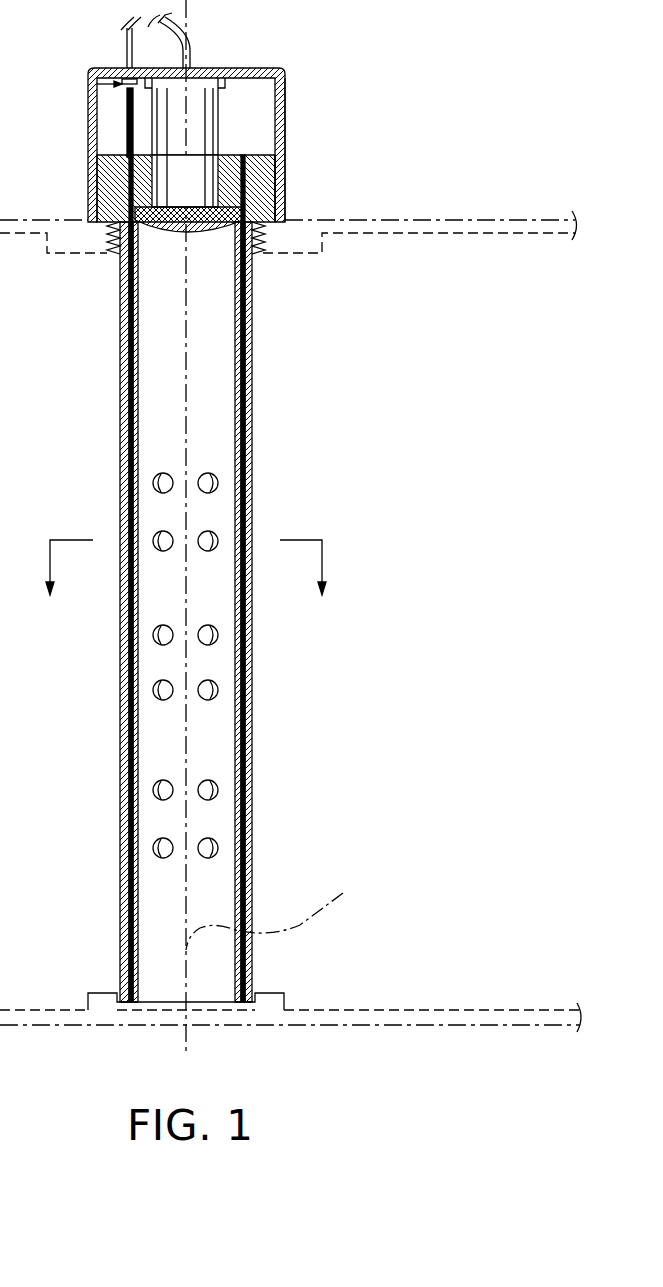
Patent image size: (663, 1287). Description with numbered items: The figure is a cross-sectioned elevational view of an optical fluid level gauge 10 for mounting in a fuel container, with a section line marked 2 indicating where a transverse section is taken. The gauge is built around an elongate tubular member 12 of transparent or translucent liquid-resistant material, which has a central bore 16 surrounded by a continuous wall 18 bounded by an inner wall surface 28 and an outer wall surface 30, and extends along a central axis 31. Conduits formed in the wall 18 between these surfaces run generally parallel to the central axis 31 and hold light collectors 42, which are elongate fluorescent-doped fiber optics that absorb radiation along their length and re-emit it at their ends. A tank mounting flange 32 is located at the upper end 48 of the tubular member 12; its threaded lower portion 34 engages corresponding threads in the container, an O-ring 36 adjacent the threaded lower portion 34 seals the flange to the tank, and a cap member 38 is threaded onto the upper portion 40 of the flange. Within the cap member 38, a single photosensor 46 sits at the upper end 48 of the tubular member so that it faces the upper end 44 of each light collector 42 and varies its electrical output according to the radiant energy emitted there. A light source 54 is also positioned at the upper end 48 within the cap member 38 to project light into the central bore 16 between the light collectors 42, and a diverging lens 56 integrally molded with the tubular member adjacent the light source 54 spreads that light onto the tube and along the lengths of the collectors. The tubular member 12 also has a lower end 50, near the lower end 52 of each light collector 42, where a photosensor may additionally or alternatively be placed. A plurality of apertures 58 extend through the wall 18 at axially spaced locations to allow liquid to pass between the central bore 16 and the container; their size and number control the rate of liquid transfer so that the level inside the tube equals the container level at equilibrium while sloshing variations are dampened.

The fluid level gauge 10 is at (397, 118).
The tubular member 12 is at (252, 358).
The central bore 16 is at (207, 432).
The wall 18 is at (248, 452).
The inner wall surface 28 is at (149, 352).
The outer wall surface 30 is at (120, 352).
The central axis 31 is at (281, 906).
The tank mounting flange 32 is at (286, 198).
The threaded lower portion 34 is at (266, 242).
The O-ring 36 is at (106, 230).
The cap member 38 is at (285, 88).
The upper portion 40 is at (285, 184).
The light collector 42 is at (127, 138).
The upper end 44 is at (127, 104).
The photosensor 46 is at (90, 86).
The upper end 48 is at (230, 155).
The lower end 50 is at (125, 898).
The lower end 52 is at (125, 963).
The light source 54 is at (222, 112).
The diverging lens 56 is at (165, 232).
The apertures 58 is at (160, 540).
The section line 2- 2 is at (186, 552).